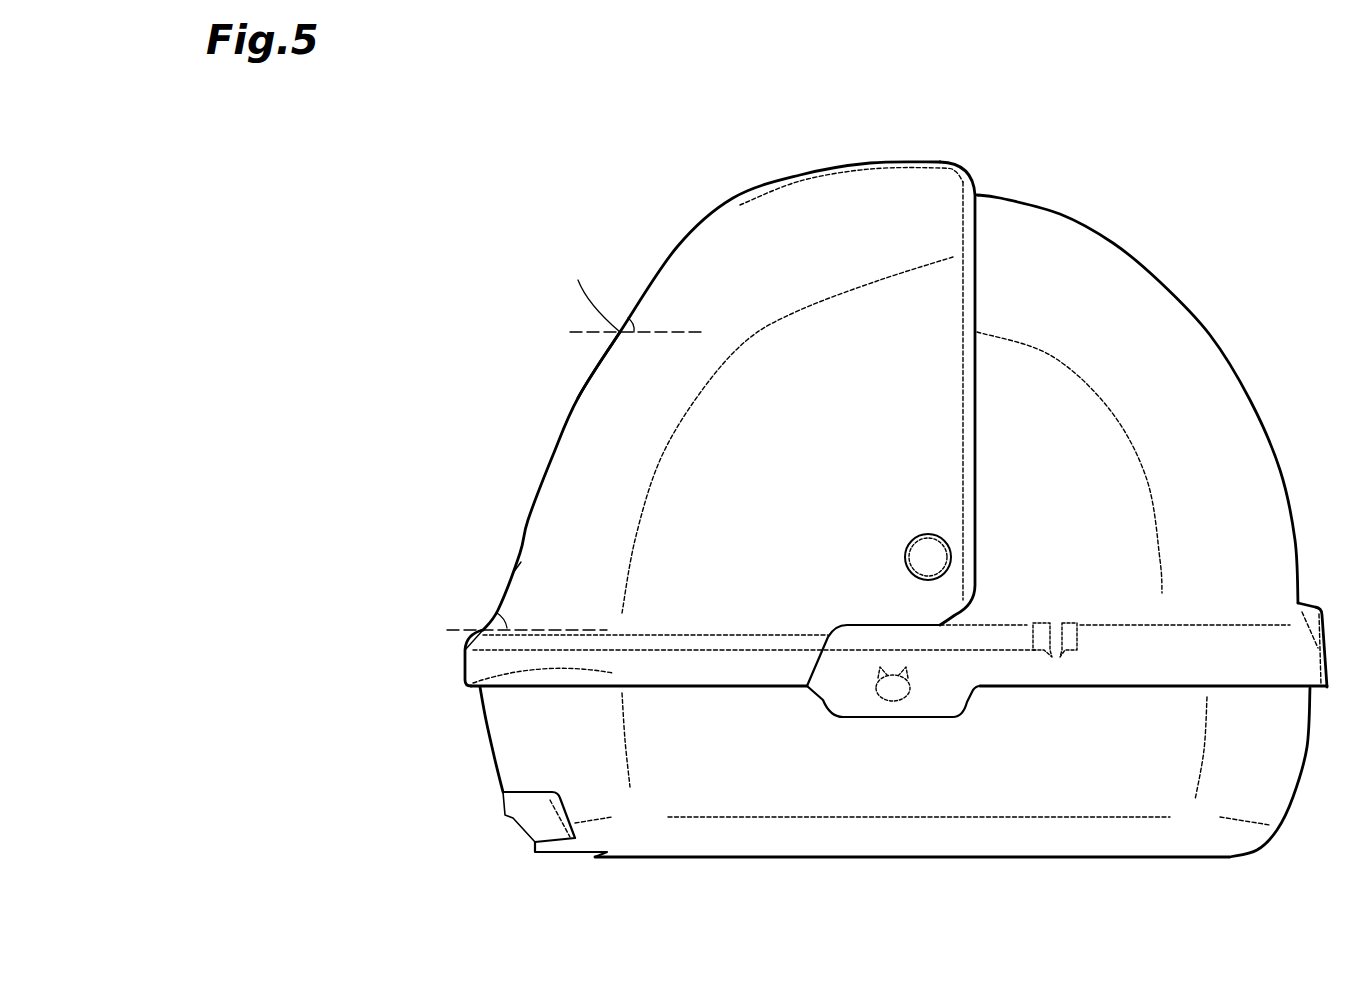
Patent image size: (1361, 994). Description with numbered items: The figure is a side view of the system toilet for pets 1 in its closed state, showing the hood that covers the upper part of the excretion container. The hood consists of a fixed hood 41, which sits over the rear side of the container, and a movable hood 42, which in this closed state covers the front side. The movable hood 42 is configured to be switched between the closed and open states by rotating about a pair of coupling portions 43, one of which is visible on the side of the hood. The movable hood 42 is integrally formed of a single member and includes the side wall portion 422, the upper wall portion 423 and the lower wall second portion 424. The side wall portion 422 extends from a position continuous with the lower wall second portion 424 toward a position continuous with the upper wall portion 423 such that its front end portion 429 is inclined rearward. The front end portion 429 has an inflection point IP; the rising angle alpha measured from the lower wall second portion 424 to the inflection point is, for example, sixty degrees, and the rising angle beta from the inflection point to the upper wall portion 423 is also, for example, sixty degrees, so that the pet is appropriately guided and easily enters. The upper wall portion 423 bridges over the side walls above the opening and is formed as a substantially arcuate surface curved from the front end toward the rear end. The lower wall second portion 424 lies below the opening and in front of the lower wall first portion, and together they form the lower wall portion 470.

The system toilet for pets 1 is at (452, 155).
The fixed hood 41 is at (1115, 244).
The movable hood 42 is at (884, 162).
The side wall portion 422 is at (768, 425).
The upper wall portion 423 is at (753, 188).
The lower wall second portion 424 is at (465, 656).
The front end portion 429 is at (593, 370).
The coupling portion 43 is at (930, 560).
The lower wall portion 470 is at (828, 695).